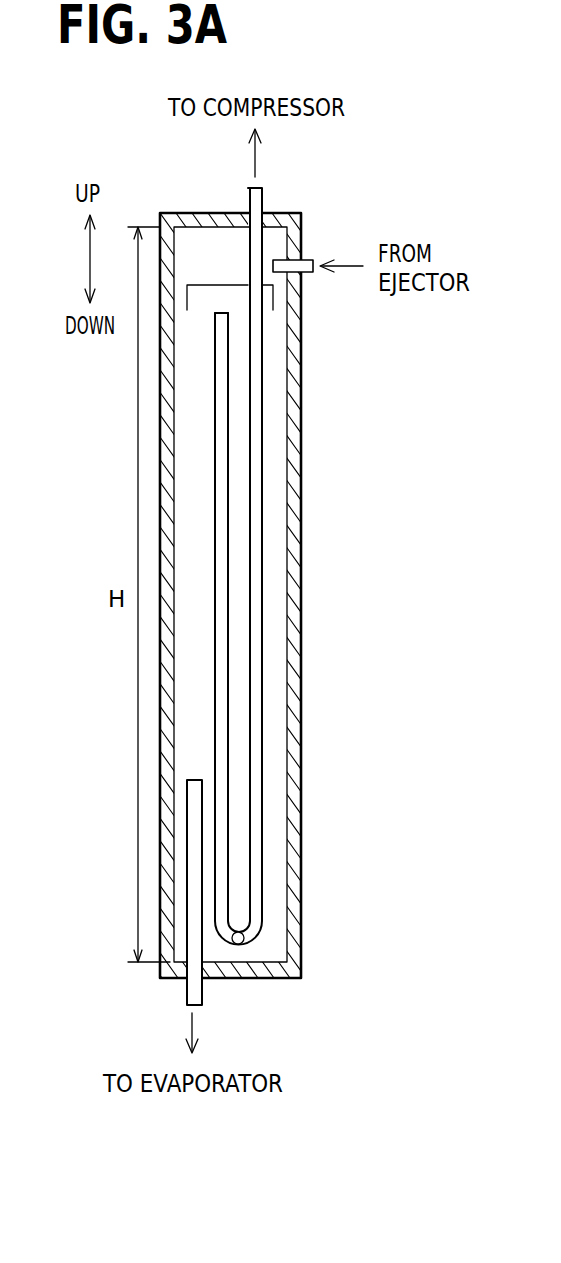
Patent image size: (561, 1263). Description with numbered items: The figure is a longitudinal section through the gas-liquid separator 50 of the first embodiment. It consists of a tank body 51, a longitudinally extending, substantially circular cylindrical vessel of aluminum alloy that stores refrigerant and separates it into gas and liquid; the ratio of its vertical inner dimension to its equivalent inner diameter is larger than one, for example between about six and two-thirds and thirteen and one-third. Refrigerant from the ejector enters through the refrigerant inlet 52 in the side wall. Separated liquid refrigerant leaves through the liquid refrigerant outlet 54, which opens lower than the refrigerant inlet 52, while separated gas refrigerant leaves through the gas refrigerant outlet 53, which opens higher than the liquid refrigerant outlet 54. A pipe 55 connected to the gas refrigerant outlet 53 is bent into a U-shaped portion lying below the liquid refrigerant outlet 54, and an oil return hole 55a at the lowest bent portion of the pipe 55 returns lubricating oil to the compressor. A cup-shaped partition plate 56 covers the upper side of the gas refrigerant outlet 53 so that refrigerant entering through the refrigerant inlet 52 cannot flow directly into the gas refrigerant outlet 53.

The gas-liquid separator 50 is at (280, 560).
The tank body 51 is at (302, 478).
The refrigerant inlet 52 is at (306, 258).
The gas refrigerant outlet 53 is at (217, 310).
The liquid refrigerant outlet 54 is at (191, 780).
The pipe 55 is at (261, 599).
The oil return hole 55a is at (238, 944).
The partition plate 56 is at (224, 285).